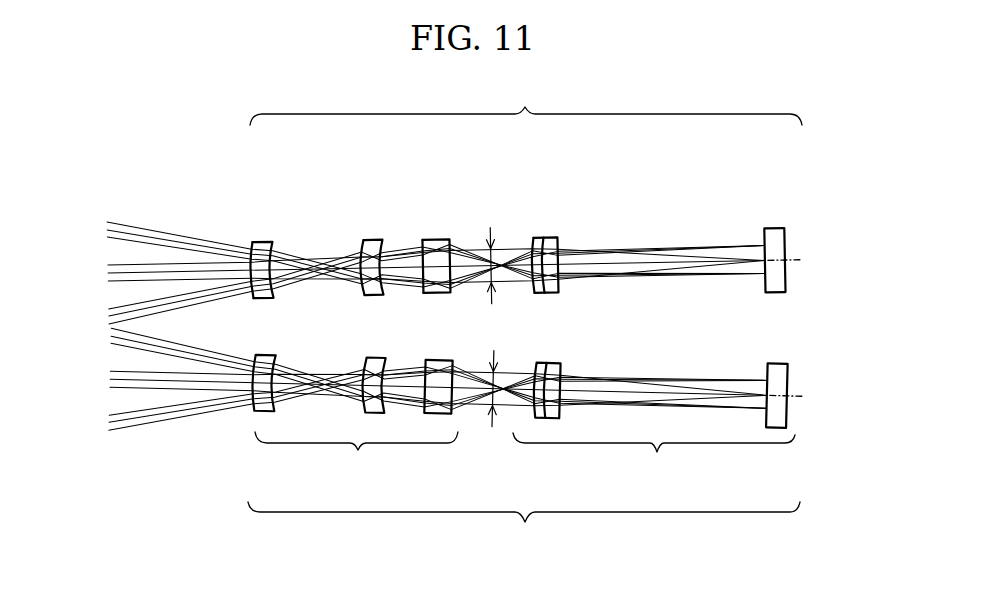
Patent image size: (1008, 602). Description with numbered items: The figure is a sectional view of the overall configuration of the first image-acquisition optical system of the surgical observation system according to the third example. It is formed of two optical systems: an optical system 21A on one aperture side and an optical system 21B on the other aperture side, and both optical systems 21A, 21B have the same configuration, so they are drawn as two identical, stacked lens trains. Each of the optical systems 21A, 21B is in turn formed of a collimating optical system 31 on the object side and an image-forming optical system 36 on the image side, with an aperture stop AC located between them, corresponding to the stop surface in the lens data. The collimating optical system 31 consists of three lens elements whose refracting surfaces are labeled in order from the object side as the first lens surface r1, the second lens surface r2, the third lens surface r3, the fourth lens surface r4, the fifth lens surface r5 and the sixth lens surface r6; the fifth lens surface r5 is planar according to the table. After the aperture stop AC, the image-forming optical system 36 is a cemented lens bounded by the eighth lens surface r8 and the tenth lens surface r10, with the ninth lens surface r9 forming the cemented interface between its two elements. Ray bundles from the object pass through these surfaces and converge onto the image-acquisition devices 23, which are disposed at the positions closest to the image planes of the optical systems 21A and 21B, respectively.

The first lens surface r1 is at (251, 249).
The second lens surface r2 is at (276, 246).
The third lens surface r3 is at (360, 242).
The fourth lens surface r4 is at (388, 242).
The fifth lens surface r5 is at (423, 296).
The sixth lens surface r6 is at (452, 238).
The aperture stop AC is at (491, 228).
The eighth lens surface r8 is at (533, 293).
The ninth lens surface r9 is at (548, 237).
The tenth lens surface r10 is at (559, 292).
The image-acquisition device 23 is at (787, 248).
The optical system at the aperture 21L side 21A is at (526, 100).
The optical system at the aperture 21R side 21B is at (524, 528).
The collimating optical system 31 is at (356, 458).
The image-forming optical system 36 is at (654, 458).